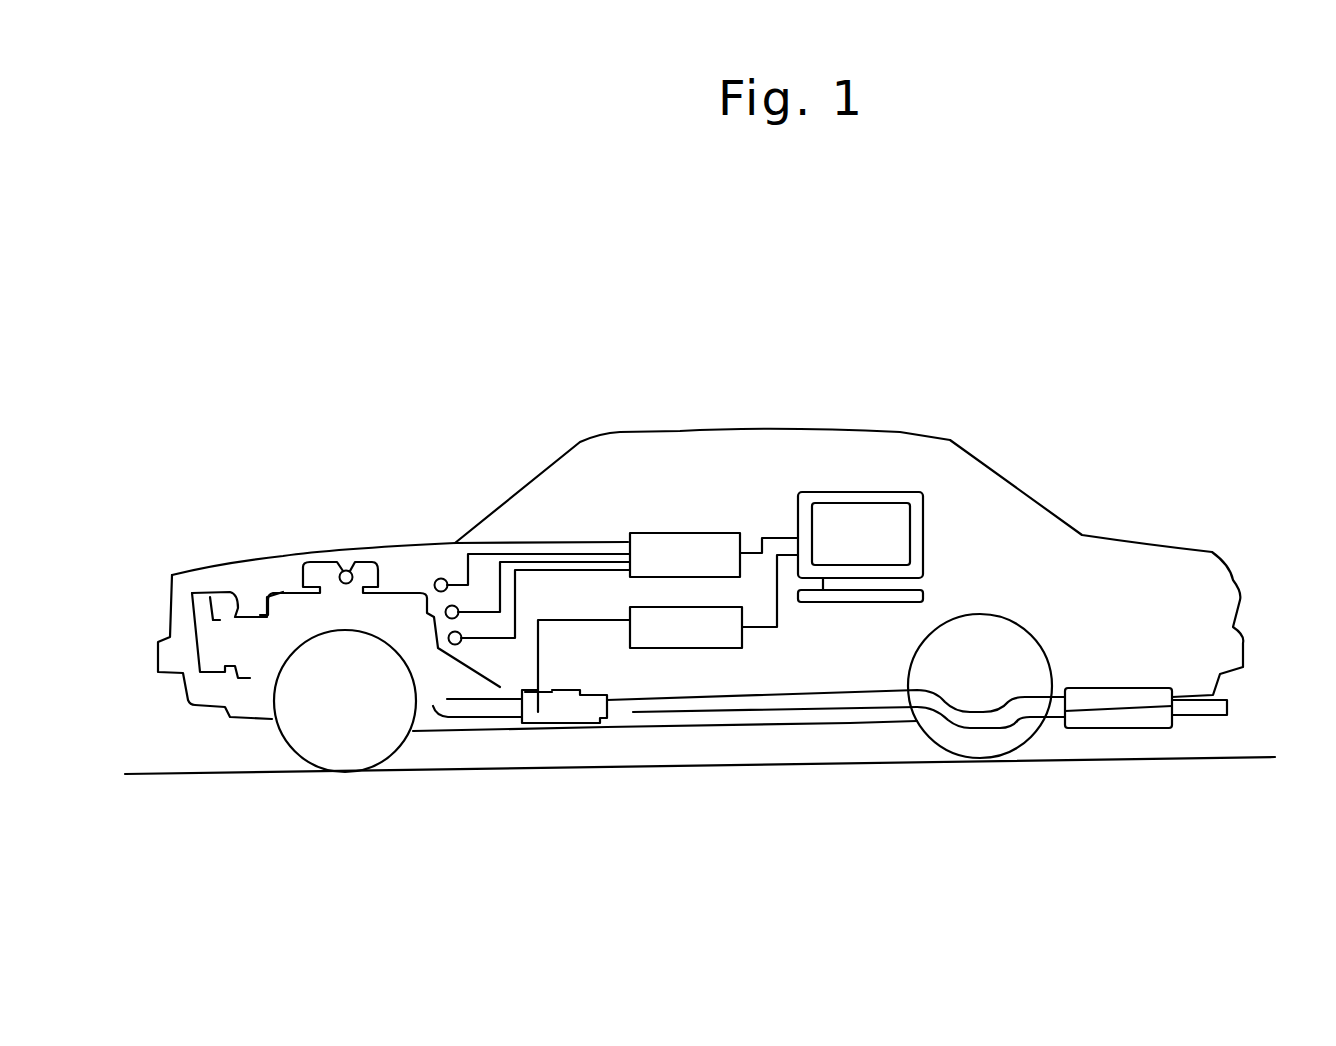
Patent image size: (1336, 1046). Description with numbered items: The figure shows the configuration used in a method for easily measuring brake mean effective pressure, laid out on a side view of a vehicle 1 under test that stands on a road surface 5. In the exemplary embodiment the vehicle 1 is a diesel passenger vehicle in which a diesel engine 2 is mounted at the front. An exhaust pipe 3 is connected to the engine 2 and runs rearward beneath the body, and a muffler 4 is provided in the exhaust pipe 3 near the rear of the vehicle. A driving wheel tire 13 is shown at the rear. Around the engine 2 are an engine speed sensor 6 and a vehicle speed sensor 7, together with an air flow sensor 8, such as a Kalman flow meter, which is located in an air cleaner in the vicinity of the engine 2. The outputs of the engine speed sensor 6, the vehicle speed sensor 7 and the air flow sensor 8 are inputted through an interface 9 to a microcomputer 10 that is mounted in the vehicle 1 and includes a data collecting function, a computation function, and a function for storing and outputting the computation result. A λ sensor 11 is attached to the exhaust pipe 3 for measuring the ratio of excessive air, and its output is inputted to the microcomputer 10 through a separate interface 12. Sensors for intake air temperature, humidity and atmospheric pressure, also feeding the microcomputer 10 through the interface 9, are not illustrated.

The vehicle 1 is at (993, 467).
The engine 2 is at (283, 593).
The exhaust pipe 3 is at (640, 713).
The muffler 4 is at (1132, 732).
The road surface 5 is at (1272, 757).
The engine speed sensor 6 is at (438, 579).
The vehicle speed sensor 7 is at (460, 558).
The air flow sensor 8 is at (344, 570).
The interface 9 is at (677, 534).
The microcomputer 10 is at (925, 535).
The λ sensor 11 is at (545, 682).
The interface 12 is at (695, 650).
The driving wheel tire 13 is at (932, 747).